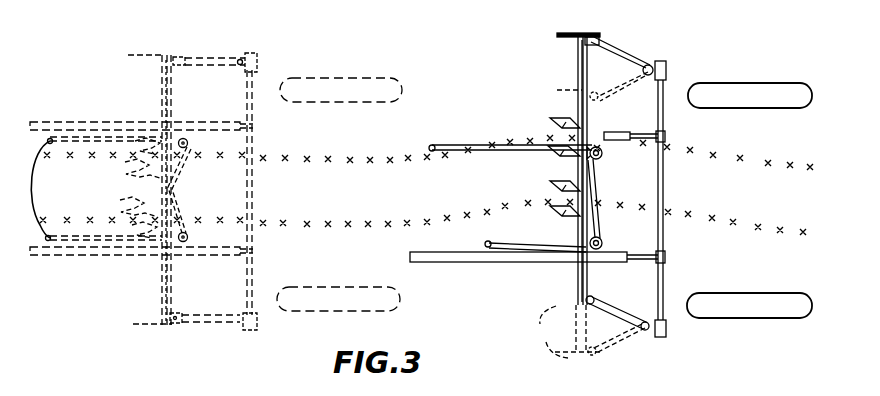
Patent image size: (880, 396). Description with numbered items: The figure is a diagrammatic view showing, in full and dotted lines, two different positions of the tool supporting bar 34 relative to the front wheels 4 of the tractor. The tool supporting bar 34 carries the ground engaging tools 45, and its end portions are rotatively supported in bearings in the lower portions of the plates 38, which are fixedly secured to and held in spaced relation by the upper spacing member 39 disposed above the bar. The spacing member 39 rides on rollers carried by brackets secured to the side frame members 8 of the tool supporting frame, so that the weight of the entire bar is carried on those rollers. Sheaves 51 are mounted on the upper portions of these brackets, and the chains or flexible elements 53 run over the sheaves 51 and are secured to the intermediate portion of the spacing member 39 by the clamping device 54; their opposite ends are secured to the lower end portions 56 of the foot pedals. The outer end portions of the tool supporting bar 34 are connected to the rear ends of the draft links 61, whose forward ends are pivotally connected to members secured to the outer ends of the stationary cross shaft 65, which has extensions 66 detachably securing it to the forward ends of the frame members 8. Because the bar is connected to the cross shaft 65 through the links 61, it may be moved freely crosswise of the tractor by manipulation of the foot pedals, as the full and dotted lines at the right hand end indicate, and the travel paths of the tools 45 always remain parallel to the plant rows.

The front wheels 4 is at (338, 79).
The side frame members 8 is at (66, 123).
The tool supporting bar 34 is at (154, 95).
The plates 38 is at (128, 57).
The upper spacing member 39 is at (170, 110).
The ground engaging tools 45 is at (125, 180).
The sheaves 51 is at (189, 143).
The chains or flexible elements 53 is at (73, 234).
The clamping device 54 is at (172, 188).
The lower end portions of foot pedals 56 is at (38, 202).
The draft links 61 is at (213, 57).
The cross shaft 65 is at (254, 200).
The extensions 66 is at (656, 133).